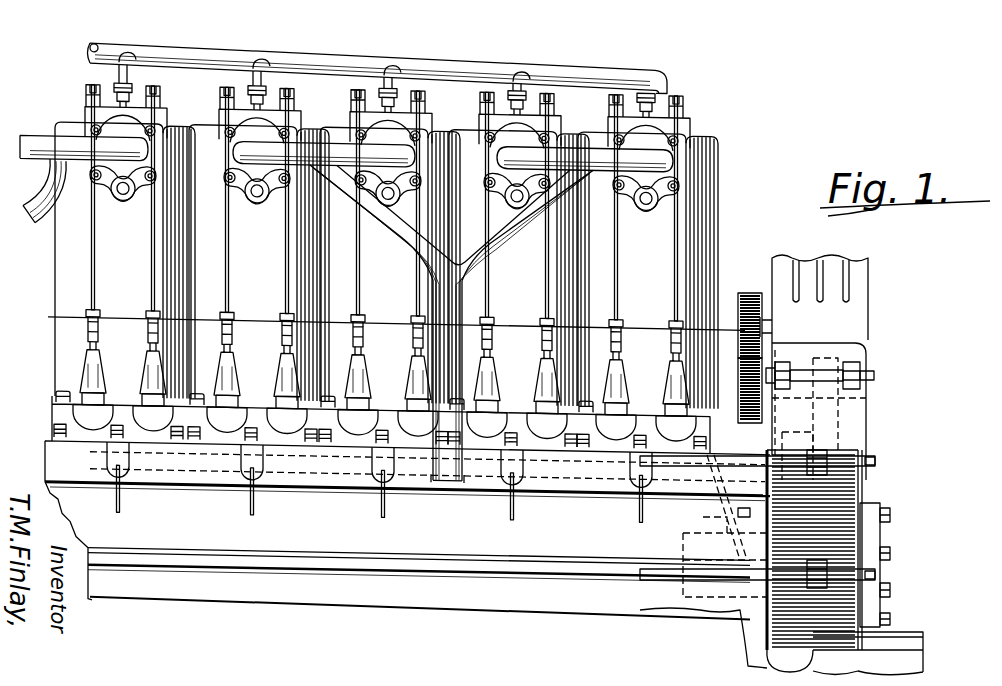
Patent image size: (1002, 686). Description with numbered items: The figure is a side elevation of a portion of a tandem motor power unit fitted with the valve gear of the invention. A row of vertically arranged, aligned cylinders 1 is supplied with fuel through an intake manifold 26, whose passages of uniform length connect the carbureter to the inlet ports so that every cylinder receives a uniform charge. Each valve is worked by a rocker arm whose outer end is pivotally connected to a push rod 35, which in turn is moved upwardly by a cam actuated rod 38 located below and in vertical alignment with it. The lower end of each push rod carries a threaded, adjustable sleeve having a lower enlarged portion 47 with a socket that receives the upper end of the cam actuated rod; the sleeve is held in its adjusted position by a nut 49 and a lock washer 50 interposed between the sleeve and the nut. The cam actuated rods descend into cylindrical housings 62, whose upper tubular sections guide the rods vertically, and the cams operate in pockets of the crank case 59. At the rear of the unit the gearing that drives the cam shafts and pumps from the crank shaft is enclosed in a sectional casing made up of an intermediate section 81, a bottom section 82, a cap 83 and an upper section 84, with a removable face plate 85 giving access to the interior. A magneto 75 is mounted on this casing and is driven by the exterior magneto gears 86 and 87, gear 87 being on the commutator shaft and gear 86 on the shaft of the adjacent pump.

The cylinders 1 is at (386, 246).
The intake manifold 26 is at (483, 266).
The push rod 35 is at (674, 243).
The cam actuated rod 38 is at (542, 347).
The lower enlarged portion 47 is at (674, 337).
The nut 49 is at (95, 313).
The lock washer 50 is at (282, 311).
The crank case 59 is at (407, 468).
The cylindrical housing 62 is at (283, 375).
The magneto 75 is at (852, 308).
The intermediate section 81 is at (843, 473).
The bottom section 82 is at (857, 597).
The cap 83 is at (842, 357).
The upper section 84 is at (843, 432).
The removable face plate 85 is at (872, 538).
The magneto gear 86 is at (745, 383).
The magneto gear 87 is at (752, 293).